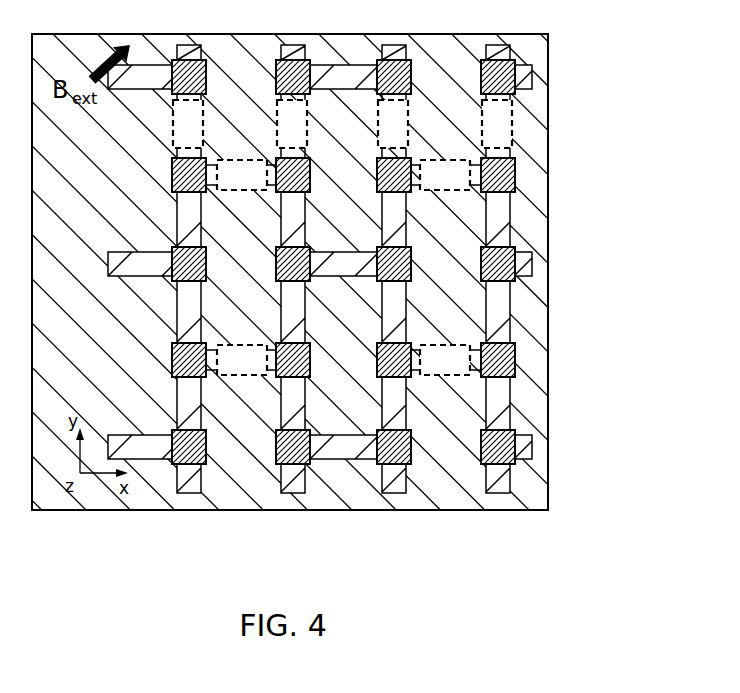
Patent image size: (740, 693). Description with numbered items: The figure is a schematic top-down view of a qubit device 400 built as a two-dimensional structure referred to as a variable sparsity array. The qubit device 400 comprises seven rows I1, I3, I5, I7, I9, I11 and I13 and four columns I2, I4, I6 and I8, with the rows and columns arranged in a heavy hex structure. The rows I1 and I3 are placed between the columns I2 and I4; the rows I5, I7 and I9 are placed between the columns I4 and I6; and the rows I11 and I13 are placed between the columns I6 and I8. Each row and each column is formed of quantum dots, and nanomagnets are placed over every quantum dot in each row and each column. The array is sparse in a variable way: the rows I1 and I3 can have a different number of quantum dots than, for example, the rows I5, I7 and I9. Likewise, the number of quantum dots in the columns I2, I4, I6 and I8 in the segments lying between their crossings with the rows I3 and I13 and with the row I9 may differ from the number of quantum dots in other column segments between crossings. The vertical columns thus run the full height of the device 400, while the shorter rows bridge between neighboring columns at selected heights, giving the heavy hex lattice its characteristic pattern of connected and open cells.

The qubit device 400 is at (565, 145).
The row I1 is at (245, 386).
The column I2 is at (185, 520).
The row I3 is at (246, 200).
The column I4 is at (291, 520).
The row I5 is at (342, 470).
The column I6 is at (392, 520).
The row I7 is at (353, 290).
The column I8 is at (496, 520).
The row I9 is at (345, 100).
The row I11 is at (447, 386).
The row I13 is at (447, 200).